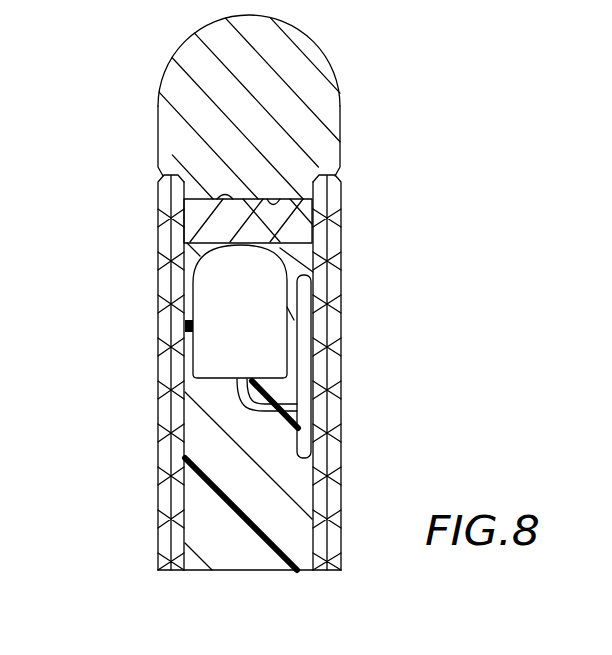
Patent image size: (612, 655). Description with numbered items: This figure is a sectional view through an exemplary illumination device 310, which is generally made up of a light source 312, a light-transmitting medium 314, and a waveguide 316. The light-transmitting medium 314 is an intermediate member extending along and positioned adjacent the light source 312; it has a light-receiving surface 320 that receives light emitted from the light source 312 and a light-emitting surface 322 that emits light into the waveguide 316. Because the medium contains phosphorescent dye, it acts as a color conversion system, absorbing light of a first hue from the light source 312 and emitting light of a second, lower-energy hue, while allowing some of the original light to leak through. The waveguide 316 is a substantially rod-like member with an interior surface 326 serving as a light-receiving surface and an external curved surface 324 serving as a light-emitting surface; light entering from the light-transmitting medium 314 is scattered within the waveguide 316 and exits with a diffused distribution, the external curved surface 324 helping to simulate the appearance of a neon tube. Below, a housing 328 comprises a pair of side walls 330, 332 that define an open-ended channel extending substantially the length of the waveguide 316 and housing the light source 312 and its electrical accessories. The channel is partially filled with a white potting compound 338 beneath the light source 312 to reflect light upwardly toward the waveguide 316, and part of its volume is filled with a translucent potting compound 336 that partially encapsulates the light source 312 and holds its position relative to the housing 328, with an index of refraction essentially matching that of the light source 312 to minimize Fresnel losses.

The illumination device 310 is at (126, 56).
The light source 312 is at (205, 333).
The light-transmitting medium 314 is at (193, 220).
The waveguide 316 is at (166, 128).
The light-receiving surface 320 is at (313, 272).
The light-emitting surface 322 is at (292, 275).
The external curved surface 324 is at (326, 55).
The interior surface 326 is at (290, 200).
The housing 328 is at (160, 247).
The side wall 330 is at (158, 505).
The side wall 332 is at (341, 410).
The translucent potting compound 336 is at (290, 293).
The white potting compound 338 is at (243, 557).